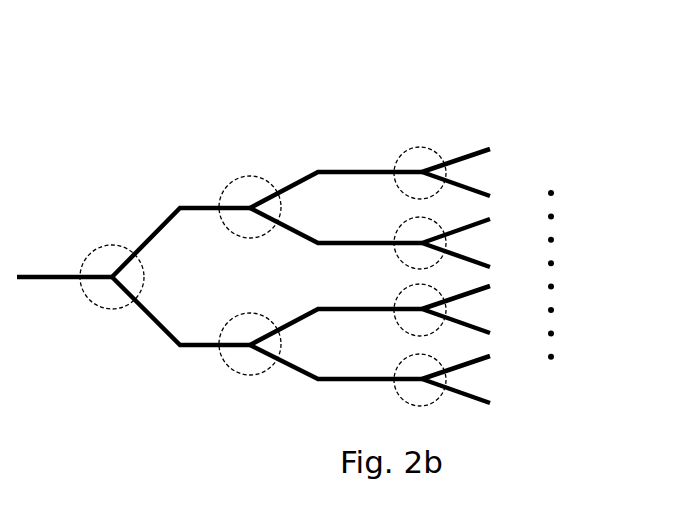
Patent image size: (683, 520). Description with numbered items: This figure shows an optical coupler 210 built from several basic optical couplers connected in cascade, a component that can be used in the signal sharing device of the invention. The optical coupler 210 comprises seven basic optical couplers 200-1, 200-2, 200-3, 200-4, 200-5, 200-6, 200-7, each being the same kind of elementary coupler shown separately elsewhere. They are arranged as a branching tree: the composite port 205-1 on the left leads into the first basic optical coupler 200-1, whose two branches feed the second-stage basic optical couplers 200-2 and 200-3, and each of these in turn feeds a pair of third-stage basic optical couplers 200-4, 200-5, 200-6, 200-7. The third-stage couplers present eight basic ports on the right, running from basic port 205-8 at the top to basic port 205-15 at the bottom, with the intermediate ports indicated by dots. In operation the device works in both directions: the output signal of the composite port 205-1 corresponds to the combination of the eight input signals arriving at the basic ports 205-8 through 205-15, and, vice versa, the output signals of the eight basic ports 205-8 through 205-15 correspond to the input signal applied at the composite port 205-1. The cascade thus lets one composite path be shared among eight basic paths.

The optical coupler 210 is at (128, 115).
The composite port 205-1 is at (53, 273).
The basic optical coupler 200-1 is at (87, 300).
The basic optical coupler 200-2 is at (240, 177).
The basic optical coupler 200-3 is at (232, 370).
The basic optical coupler 200-4 is at (410, 148).
The basic optical coupler 200-5 is at (410, 220).
The basic optical coupler 200-6 is at (410, 288).
The basic optical coupler 200-7 is at (410, 358).
The basic port 205-8 is at (490, 150).
The basic port 205-15 is at (490, 400).